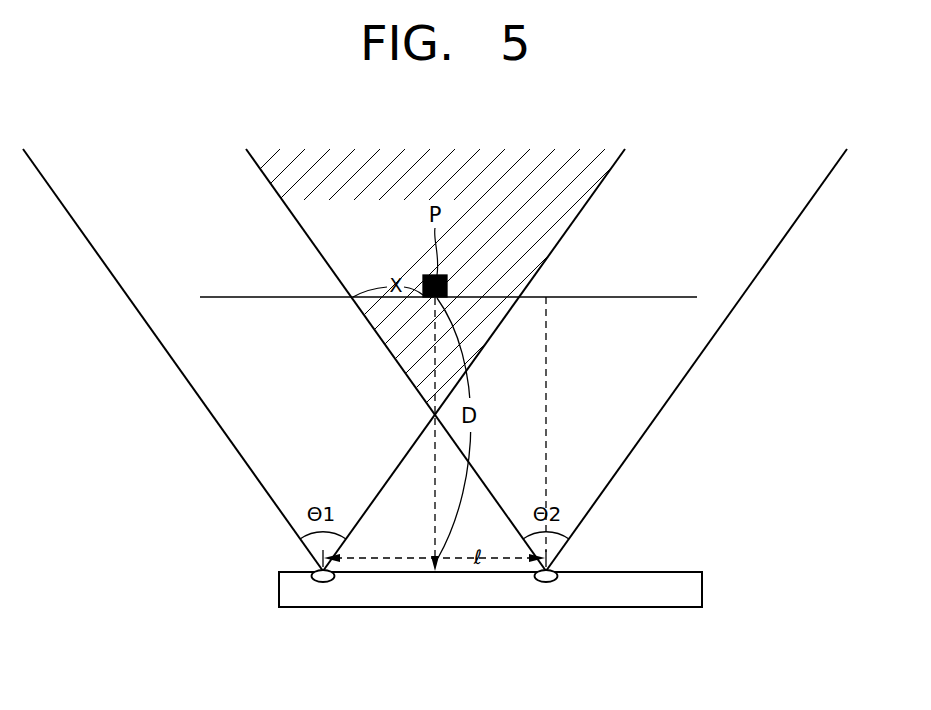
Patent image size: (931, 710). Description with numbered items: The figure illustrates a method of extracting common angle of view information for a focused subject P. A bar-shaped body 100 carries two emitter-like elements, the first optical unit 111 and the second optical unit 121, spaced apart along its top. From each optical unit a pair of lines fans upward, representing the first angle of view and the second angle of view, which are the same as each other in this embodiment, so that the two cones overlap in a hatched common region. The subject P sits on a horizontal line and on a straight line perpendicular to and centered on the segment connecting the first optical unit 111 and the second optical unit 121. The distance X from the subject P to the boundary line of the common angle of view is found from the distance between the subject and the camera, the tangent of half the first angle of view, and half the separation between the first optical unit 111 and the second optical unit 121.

The sensing device body 100 is at (725, 583).
The first optical unit 111 is at (323, 582).
The second optical unit 121 is at (546, 582).